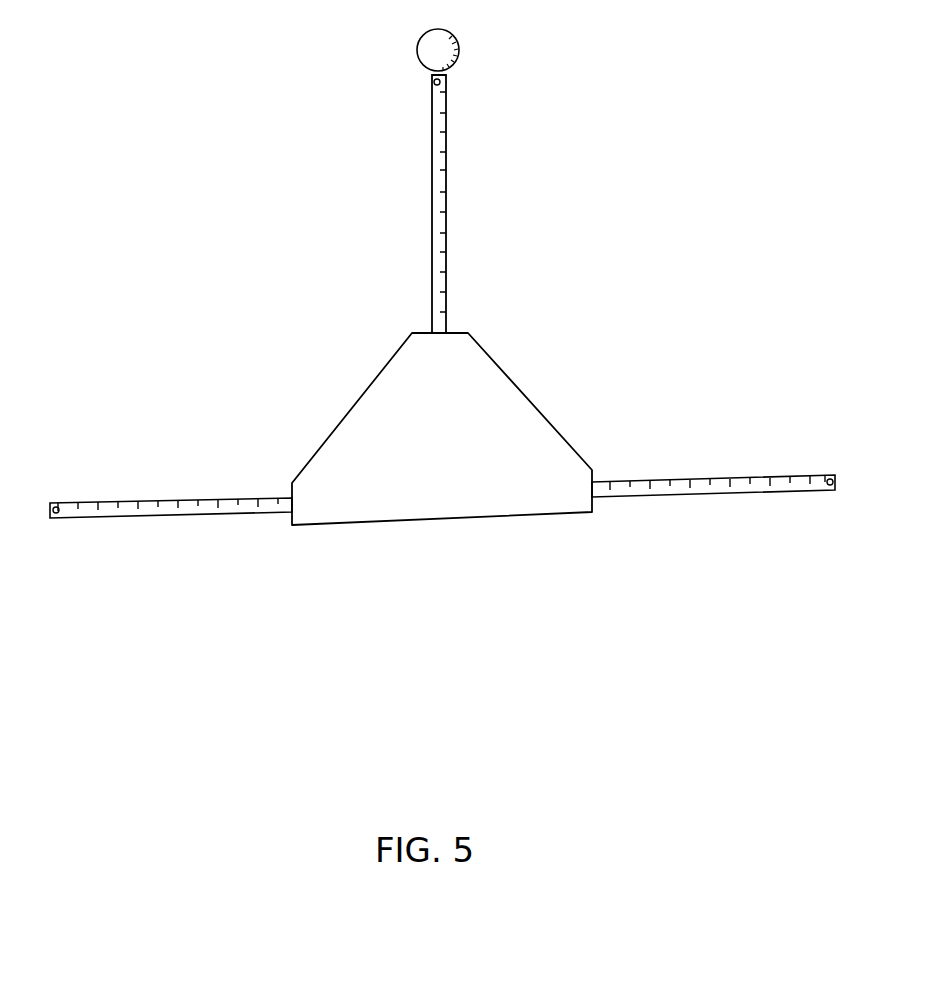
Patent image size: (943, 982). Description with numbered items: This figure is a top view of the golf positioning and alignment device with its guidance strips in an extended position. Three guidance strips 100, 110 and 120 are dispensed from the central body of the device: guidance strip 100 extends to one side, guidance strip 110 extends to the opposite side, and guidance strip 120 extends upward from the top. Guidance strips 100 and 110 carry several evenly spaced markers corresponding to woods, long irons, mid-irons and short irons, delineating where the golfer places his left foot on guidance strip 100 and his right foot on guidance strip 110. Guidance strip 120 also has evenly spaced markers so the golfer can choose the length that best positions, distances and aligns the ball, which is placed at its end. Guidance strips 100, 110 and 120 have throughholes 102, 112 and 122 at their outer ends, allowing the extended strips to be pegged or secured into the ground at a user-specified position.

The guidance strip 100 is at (188, 512).
The throughhole 102 is at (55, 514).
The guidance strip 110 is at (750, 490).
The throughhole 112 is at (829, 487).
The guidance strip 120 is at (441, 163).
The throughhole 122 is at (448, 81).